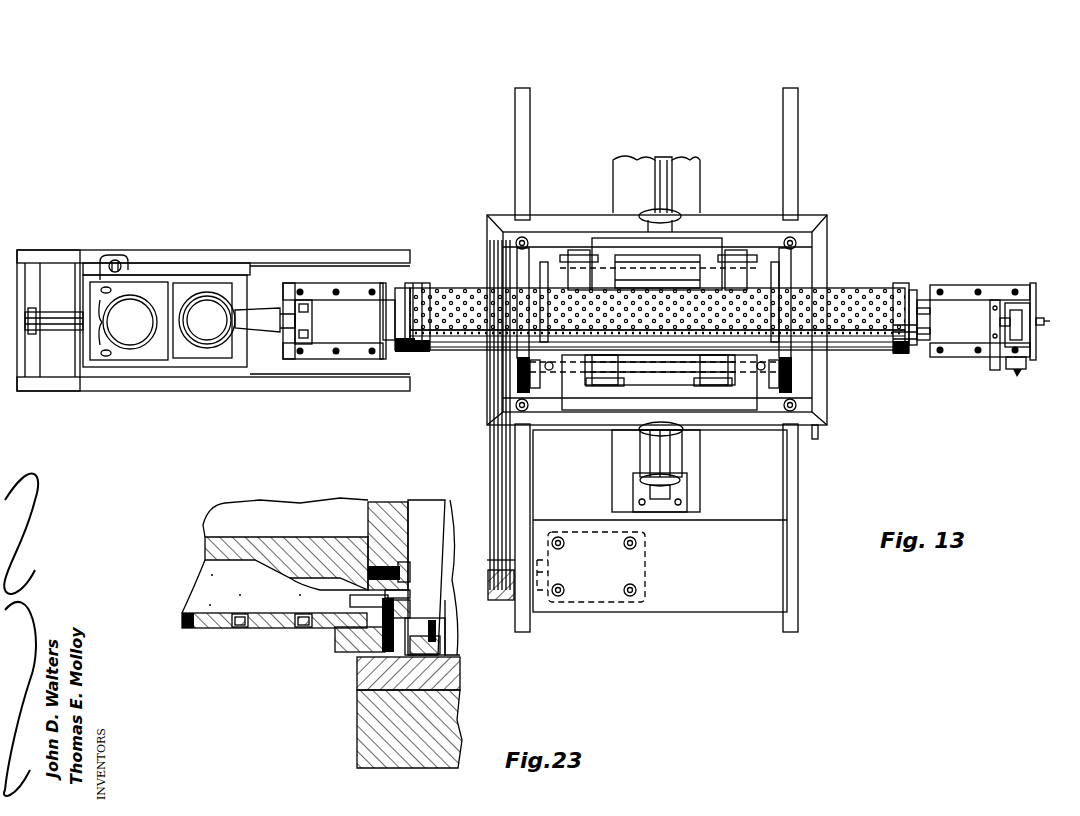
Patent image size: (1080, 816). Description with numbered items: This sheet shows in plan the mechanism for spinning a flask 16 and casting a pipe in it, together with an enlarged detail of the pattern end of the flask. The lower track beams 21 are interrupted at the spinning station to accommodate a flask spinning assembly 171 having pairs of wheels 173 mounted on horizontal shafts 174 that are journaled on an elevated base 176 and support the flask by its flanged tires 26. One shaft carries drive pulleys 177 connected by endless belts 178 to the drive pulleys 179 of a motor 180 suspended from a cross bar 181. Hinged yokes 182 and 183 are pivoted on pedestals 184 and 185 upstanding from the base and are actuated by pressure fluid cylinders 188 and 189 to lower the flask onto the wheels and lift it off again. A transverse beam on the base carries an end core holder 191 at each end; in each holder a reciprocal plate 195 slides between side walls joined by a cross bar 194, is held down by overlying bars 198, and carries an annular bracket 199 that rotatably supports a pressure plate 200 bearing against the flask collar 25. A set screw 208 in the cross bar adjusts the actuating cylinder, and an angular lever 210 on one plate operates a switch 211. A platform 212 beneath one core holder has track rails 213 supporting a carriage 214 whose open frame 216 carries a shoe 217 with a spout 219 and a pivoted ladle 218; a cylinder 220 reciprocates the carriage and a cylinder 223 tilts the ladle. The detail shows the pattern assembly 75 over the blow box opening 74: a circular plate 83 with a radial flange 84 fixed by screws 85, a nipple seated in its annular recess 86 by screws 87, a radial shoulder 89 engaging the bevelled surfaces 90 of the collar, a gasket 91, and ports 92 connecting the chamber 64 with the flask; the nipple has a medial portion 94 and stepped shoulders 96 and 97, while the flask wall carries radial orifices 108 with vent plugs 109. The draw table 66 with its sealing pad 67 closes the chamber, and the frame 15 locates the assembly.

In FIG. 13, the base frame 15 is at (798, 536).
In FIG. 13, the flask 16 is at (455, 352).
In FIG. 23, the flask 16 is at (205, 628).
In FIG. 13, the lower track beams 21 is at (515, 140).
In FIG. 13, the external collars 25 is at (898, 357).
In FIG. 23, the external collars 25 is at (335, 640).
In FIG. 13, the flanged tires 26 is at (795, 290).
In FIG. 23, the chamber 64 is at (458, 648).
In FIG. 23, the draw table 66 is at (357, 735).
In FIG. 23, the sealing pad 67 is at (357, 683).
In FIG. 23, the circular opening 74 is at (424, 508).
In FIG. 23, the pattern assembly 75 is at (205, 548).
In FIG. 23, the circular plate 83 is at (385, 496).
In FIG. 23, the radial flange 84 is at (432, 652).
In FIG. 23, the screws 85 is at (438, 630).
In FIG. 23, the annular recess 86 is at (360, 555).
In FIG. 23, the screws 87 is at (412, 566).
In FIG. 23, the radial shoulder 89 is at (352, 610).
In FIG. 23, the bevelled surfaces 90 is at (345, 653).
In FIG. 23, the gasket 91 is at (404, 608).
In FIG. 23, the ports 92 is at (405, 592).
In FIG. 23, the medial portion 94 is at (226, 548).
In FIG. 23, the stepped shoulder 96 is at (268, 560).
In FIG. 23, the stepped shoulder 97 is at (310, 572).
In FIG. 23, the radial orifices 108 is at (230, 628).
In FIG. 23, the vent plugs 109 is at (190, 614).
In FIG. 13, the flask spinning assembly 171 is at (812, 250).
In FIG. 13, the wheels 173 is at (800, 375).
In FIG. 13, the horizontal shafts 174 is at (660, 268).
In FIG. 13, the elevated base 176 is at (810, 422).
In FIG. 13, the drive pulleys 177 is at (490, 388).
In FIG. 13, the endless belts 178 is at (490, 462).
In FIG. 13, the drive pulleys 179 is at (488, 530).
In FIG. 13, the motor 180 is at (646, 560).
In FIG. 13, the cross bar 181 is at (695, 612).
In FIG. 13, the hinged yoke 182 is at (592, 410).
In FIG. 13, the hinged yoke 183 is at (706, 240).
In FIG. 13, the pedestal 184 is at (576, 250).
In FIG. 13, the pedestal 185 is at (714, 386).
In FIG. 13, the pressure fluid cylinder 188 is at (682, 457).
In FIG. 13, the pressure fluid cylinder 189 is at (658, 165).
In FIG. 13, the end core holder 191 is at (950, 288).
In FIG. 13, the cross bar 194 is at (1030, 312).
In FIG. 13, the reciprocal plate 195 is at (965, 357).
In FIG. 13, the overlying bars 198 is at (360, 281).
In FIG. 13, the annular bracket 199 is at (395, 352).
In FIG. 13, the pressure plate 200 is at (902, 283).
In FIG. 13, the set screw 208 is at (1043, 326).
In FIG. 13, the angular lever 210 is at (990, 326).
In FIG. 13, the switch 211 is at (1027, 364).
In FIG. 13, the platform 212 is at (62, 391).
In FIG. 13, the track rails 213 is at (284, 391).
In FIG. 13, the carriage 214 is at (248, 252).
In FIG. 13, the open frame 216 is at (117, 368).
In FIG. 13, the shoe 217 is at (188, 304).
In FIG. 13, the ladle 218 is at (118, 304).
In FIG. 13, the spout 219 is at (260, 308).
In FIG. 13, the pressure fluid cylinder 220 is at (60, 313).
In FIG. 13, the pressure fluid cylinder 223 is at (113, 258).